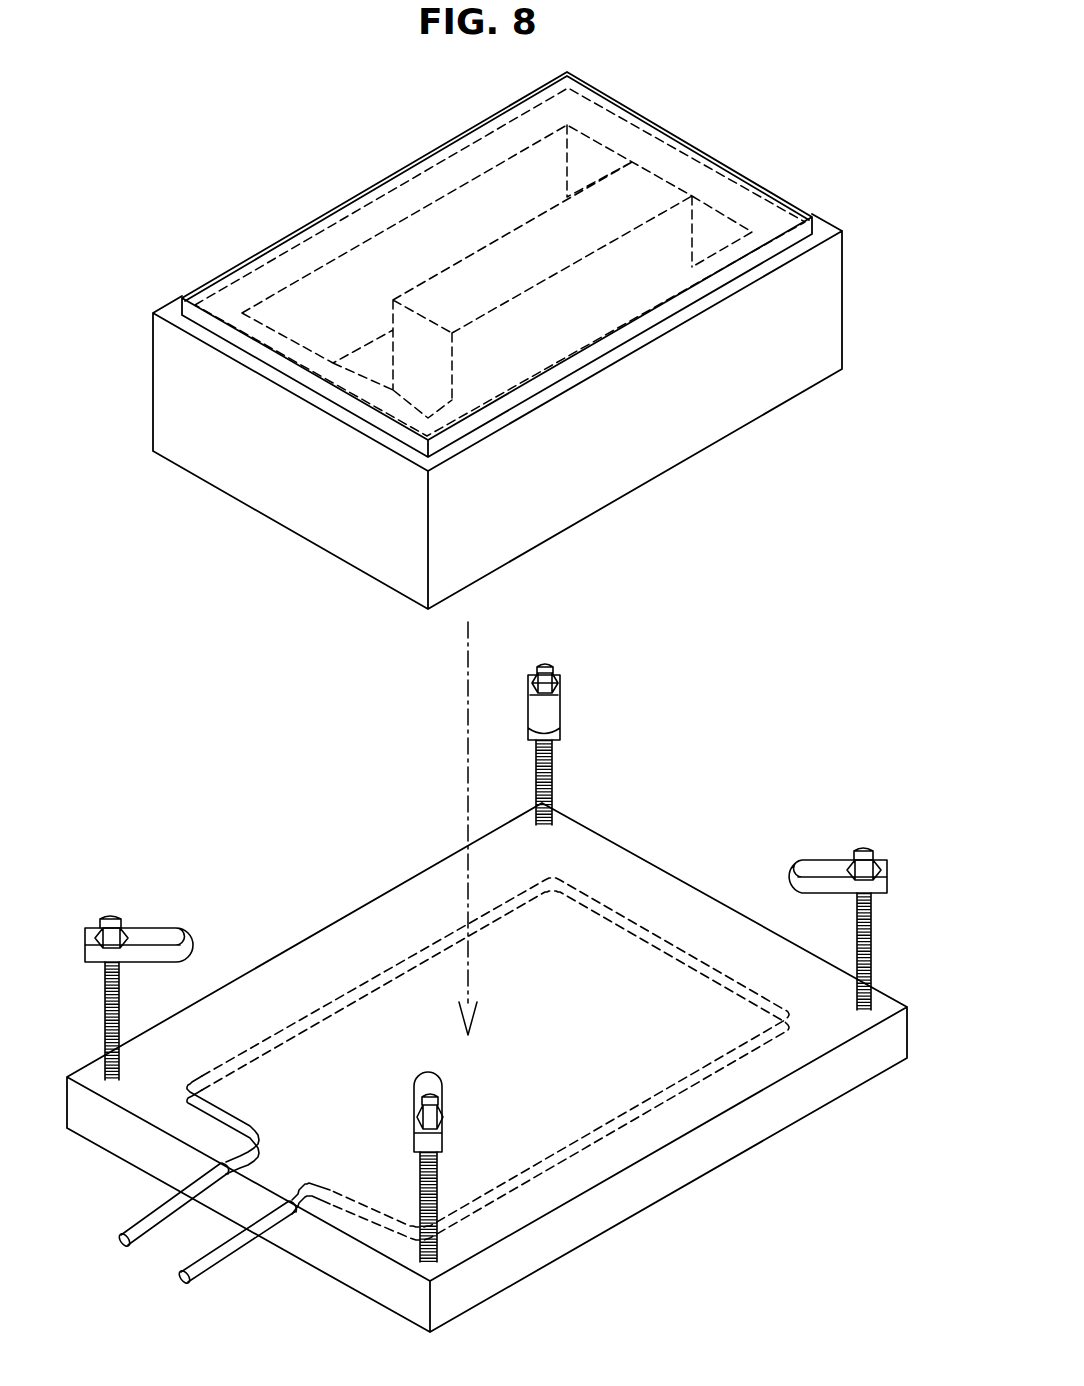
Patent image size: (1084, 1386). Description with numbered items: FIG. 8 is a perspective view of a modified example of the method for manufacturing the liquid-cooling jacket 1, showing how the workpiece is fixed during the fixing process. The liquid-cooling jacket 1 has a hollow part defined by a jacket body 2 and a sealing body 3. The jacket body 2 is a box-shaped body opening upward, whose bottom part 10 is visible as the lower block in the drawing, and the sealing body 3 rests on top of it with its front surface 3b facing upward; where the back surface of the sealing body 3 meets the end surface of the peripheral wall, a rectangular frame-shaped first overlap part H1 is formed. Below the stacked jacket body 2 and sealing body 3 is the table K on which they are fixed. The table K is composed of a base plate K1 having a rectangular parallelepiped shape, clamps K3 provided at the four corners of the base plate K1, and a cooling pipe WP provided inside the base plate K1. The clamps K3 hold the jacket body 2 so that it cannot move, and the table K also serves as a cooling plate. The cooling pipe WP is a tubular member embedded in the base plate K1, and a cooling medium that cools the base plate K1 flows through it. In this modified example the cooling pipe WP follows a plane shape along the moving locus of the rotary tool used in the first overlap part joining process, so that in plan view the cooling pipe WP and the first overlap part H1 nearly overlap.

The liquid-cooling jacket 1 is at (544, 328).
The jacket body 2 is at (544, 340).
The sealing body 3 is at (500, 260).
The front surface 3b is at (648, 196).
The first overlap part H1 is at (860, 220).
The bottom part 10 is at (640, 494).
The table K is at (487, 991).
The base plate K1 is at (620, 1212).
The clamps K3 is at (545, 712).
The cooling pipe WP is at (207, 1265).